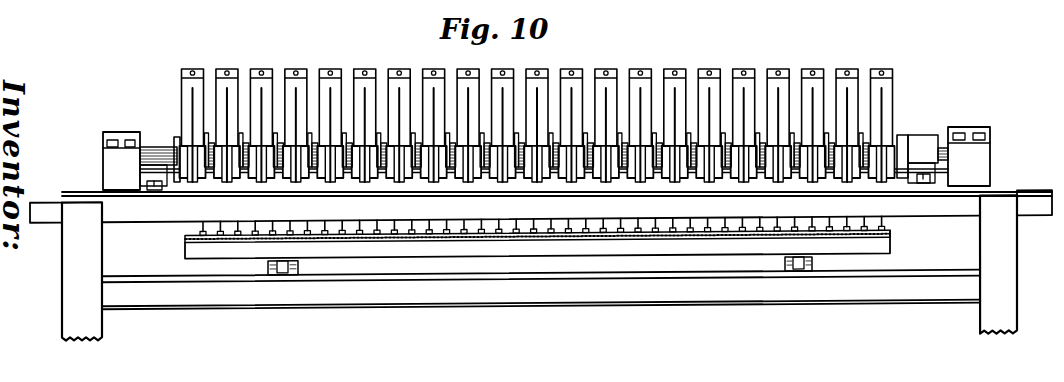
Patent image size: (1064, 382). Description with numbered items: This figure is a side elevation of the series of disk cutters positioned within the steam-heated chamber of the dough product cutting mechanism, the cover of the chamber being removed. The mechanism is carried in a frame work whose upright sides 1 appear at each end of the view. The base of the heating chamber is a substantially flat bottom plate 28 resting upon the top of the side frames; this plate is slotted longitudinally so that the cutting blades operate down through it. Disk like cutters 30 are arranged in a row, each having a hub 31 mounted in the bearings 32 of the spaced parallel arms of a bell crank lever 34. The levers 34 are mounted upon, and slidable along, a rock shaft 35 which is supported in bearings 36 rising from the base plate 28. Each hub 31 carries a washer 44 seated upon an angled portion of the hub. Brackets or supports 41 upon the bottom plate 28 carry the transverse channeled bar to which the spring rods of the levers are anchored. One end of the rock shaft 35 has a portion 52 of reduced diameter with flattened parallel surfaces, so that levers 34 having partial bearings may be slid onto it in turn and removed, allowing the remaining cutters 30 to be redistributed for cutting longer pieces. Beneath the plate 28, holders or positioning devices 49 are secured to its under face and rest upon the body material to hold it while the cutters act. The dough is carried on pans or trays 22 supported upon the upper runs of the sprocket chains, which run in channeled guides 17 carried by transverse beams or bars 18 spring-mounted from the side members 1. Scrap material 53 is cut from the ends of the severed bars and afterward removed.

The upright side 1 is at (66, 258).
The channeled guide 17 is at (270, 267).
The transverse beam 18 is at (543, 299).
The pan 22 is at (196, 256).
The bottom plate 28 is at (996, 193).
The disk cutter 30 is at (191, 101).
The hub 31 is at (225, 179).
The bearing 32 is at (313, 178).
The bell crank lever 34 is at (184, 98).
The rock shaft 35 is at (155, 143).
The bearing 36 is at (103, 163).
The bracket 41 is at (150, 193).
The washer 44 is at (232, 178).
The holder 49 is at (250, 224).
The reduced diameter portion 52 is at (921, 140).
The scrap material 53 is at (185, 241).